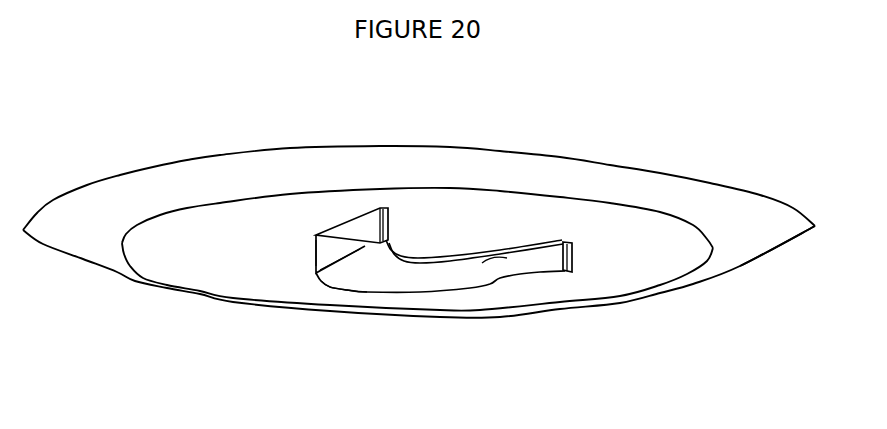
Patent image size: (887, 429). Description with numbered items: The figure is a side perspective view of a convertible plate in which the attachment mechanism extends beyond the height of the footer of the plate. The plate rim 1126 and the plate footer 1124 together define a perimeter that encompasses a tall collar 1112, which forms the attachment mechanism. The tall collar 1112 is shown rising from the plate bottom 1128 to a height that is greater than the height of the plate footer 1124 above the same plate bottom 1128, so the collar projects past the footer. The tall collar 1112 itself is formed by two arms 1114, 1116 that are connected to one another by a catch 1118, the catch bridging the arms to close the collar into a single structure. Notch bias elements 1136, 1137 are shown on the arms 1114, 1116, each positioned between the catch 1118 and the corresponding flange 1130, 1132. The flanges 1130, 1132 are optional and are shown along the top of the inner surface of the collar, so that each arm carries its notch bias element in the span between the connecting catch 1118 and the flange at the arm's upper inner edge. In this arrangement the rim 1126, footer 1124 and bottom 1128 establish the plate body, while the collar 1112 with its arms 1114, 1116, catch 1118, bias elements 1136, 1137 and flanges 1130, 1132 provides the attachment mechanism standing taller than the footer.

The tall collar 1112 is at (315, 251).
The arm 1114 is at (330, 257).
The arm 1116 is at (530, 268).
The catch 1118 is at (387, 280).
The plate footer 1124 is at (717, 334).
The plate rim 1126 is at (752, 237).
The plate bottom 1128 is at (193, 257).
The flange 1130 is at (573, 272).
The flange 1132 is at (379, 221).
The notch bias element 1136 is at (500, 277).
The notch bias element 1137 is at (350, 252).